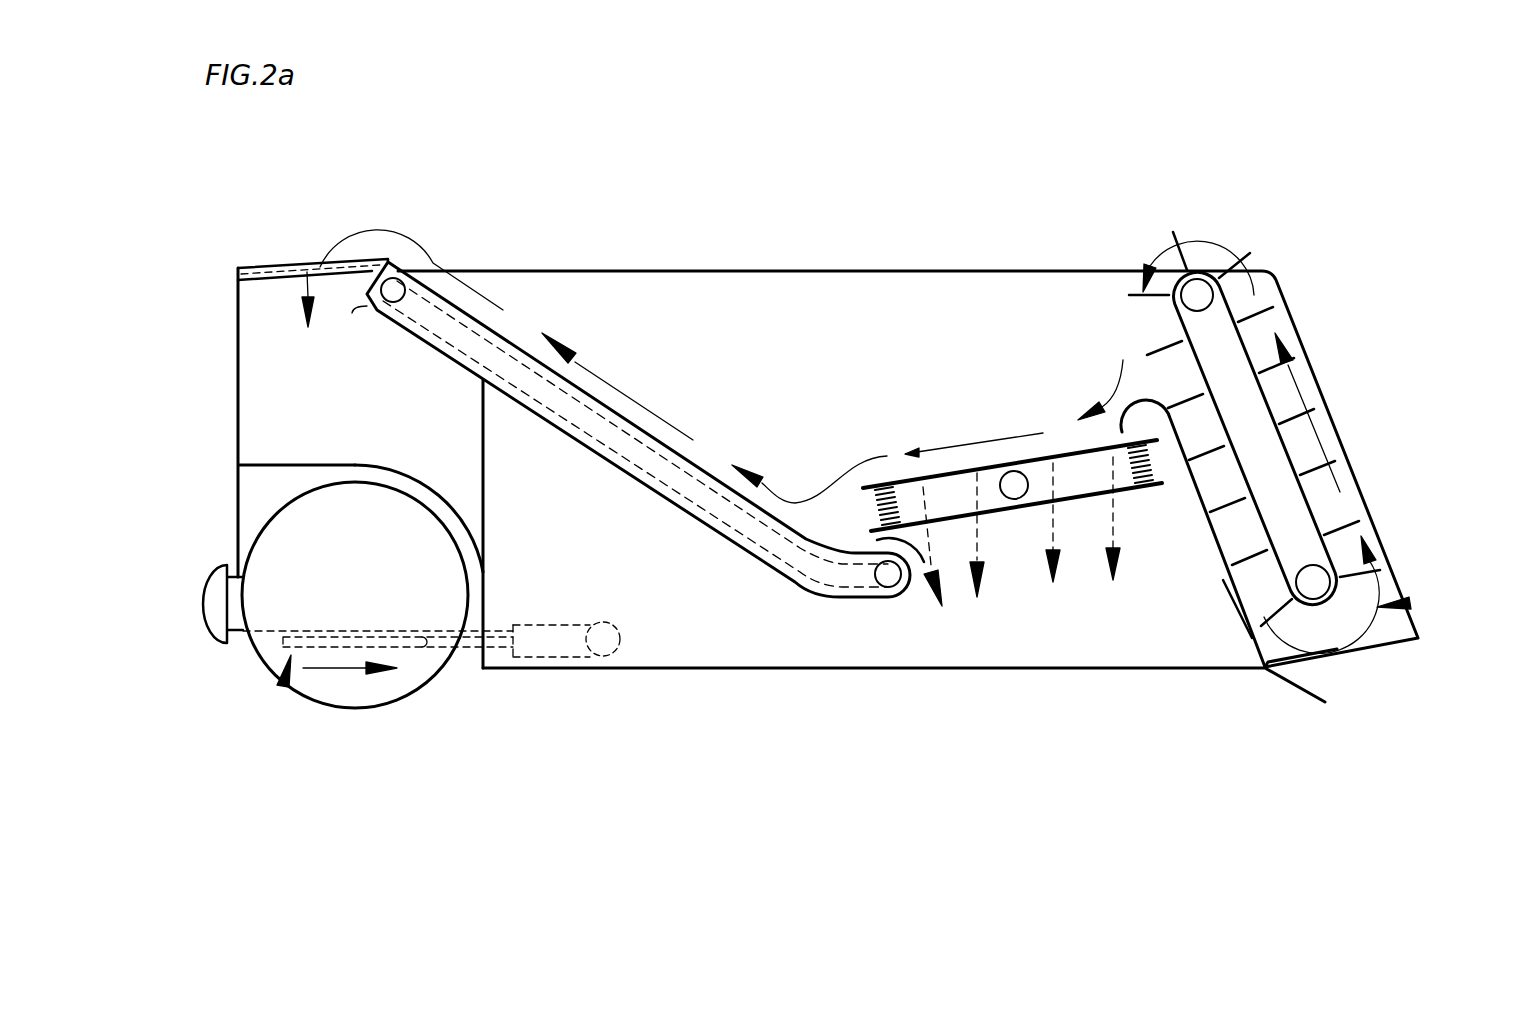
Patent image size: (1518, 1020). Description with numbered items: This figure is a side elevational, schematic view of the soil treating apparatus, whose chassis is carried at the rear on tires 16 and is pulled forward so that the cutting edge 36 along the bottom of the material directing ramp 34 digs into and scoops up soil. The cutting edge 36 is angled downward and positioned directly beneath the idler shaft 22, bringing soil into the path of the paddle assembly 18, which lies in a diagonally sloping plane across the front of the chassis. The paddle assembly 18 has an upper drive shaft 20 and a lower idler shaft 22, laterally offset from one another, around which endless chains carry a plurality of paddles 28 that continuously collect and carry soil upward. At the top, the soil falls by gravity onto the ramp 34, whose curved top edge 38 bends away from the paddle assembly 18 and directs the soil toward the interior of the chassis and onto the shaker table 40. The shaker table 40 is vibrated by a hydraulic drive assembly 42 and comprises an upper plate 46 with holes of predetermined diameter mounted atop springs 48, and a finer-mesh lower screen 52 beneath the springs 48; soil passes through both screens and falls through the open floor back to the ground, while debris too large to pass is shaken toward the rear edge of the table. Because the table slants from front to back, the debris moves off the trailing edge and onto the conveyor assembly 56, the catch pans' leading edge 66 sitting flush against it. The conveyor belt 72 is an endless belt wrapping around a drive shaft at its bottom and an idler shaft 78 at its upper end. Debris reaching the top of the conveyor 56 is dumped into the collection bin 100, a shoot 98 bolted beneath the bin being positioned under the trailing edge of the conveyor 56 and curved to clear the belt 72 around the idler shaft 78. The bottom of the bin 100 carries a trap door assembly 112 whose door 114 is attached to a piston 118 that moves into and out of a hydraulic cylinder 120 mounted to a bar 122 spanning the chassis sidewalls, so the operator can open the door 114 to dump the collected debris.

The tires 16 is at (327, 695).
The paddle assembly 18 is at (1410, 603).
The drive shaft 20 is at (1273, 273).
The idler shaft 22 is at (1313, 584).
The paddles 28 is at (1350, 527).
The material directing ramp 34 is at (1225, 580).
The cutting edge 36 is at (1293, 688).
The top edge of ramp 38 is at (1142, 400).
The shaker table 40 is at (1049, 404).
The hydraulic drive assembly 42 is at (1020, 500).
The upper plate 46 is at (912, 482).
The springs 48 is at (880, 503).
The lower screen 52 is at (1097, 502).
The conveyor assembly 56 is at (735, 568).
The leading edge of catch pan 66 is at (892, 576).
The conveyor belt 72 is at (810, 588).
The idler shaft 78 is at (396, 289).
The shoot 98 is at (353, 312).
The collection bin 100 is at (296, 355).
The trap door assembly 112 is at (281, 687).
The door 114 is at (421, 648).
The piston 118 is at (460, 648).
The hydraulic cylinder 120 is at (552, 658).
The bar 122 is at (603, 656).